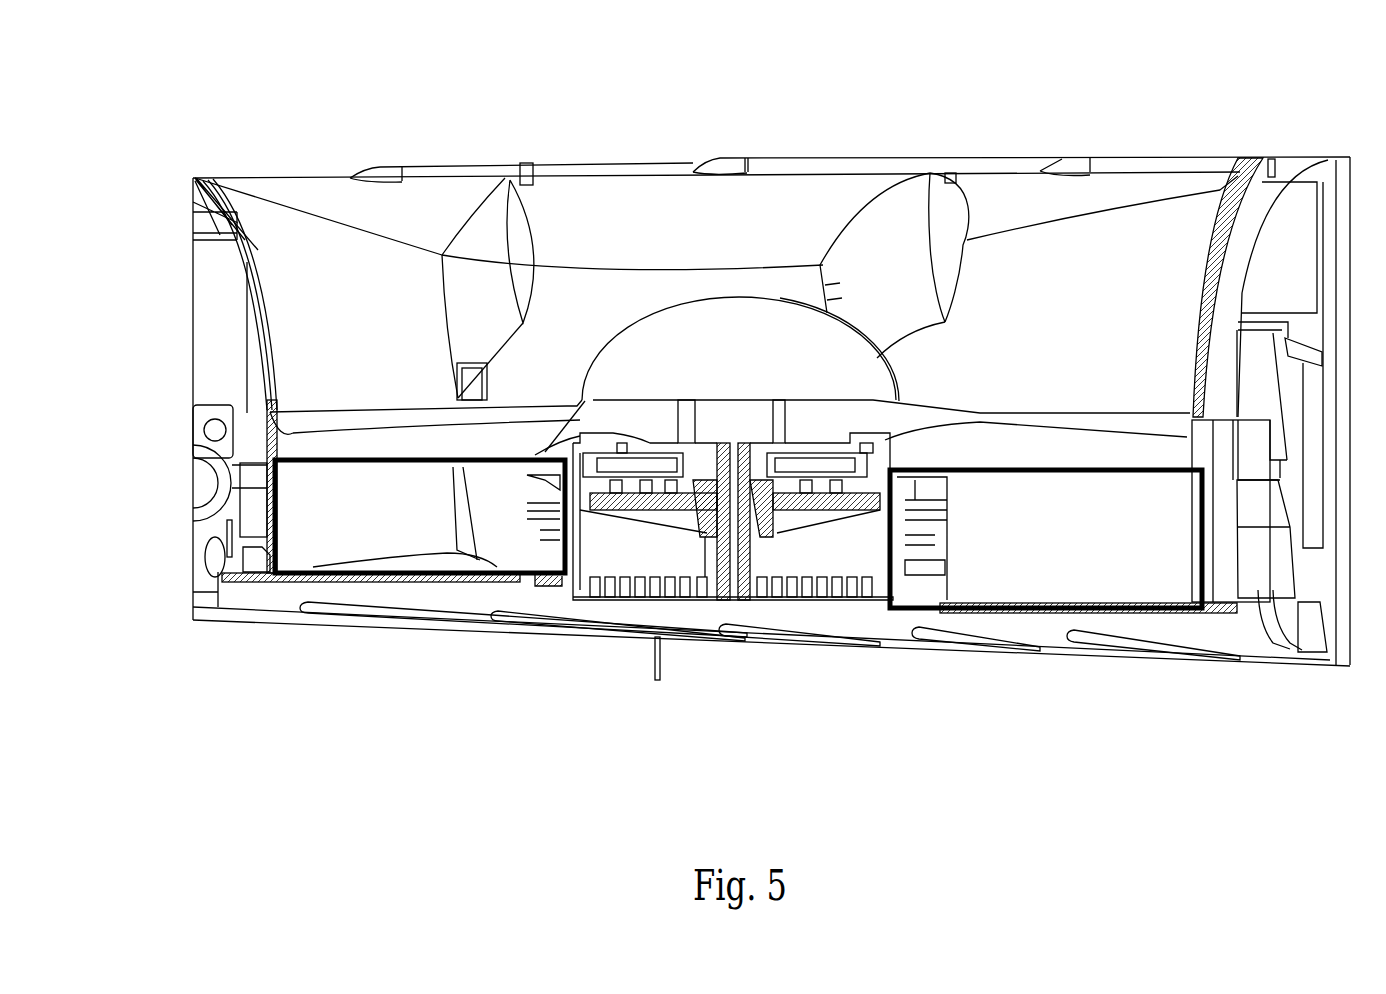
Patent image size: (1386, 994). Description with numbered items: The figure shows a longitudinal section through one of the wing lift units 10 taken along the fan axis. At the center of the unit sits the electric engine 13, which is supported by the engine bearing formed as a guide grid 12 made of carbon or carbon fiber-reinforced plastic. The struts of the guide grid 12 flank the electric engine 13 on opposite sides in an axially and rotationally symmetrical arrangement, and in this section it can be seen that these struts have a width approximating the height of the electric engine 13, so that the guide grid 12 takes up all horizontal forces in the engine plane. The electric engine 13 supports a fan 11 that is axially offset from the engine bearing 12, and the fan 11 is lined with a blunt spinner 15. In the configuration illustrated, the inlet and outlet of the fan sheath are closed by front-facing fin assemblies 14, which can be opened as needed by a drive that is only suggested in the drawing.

The wing lift unit 10 is at (208, 118).
The fan 11 is at (555, 407).
The guide grid 12 is at (210, 490).
The electric engine 13 is at (757, 598).
The fin assemblies 14 is at (998, 190).
The blunt spinner 15 is at (778, 340).